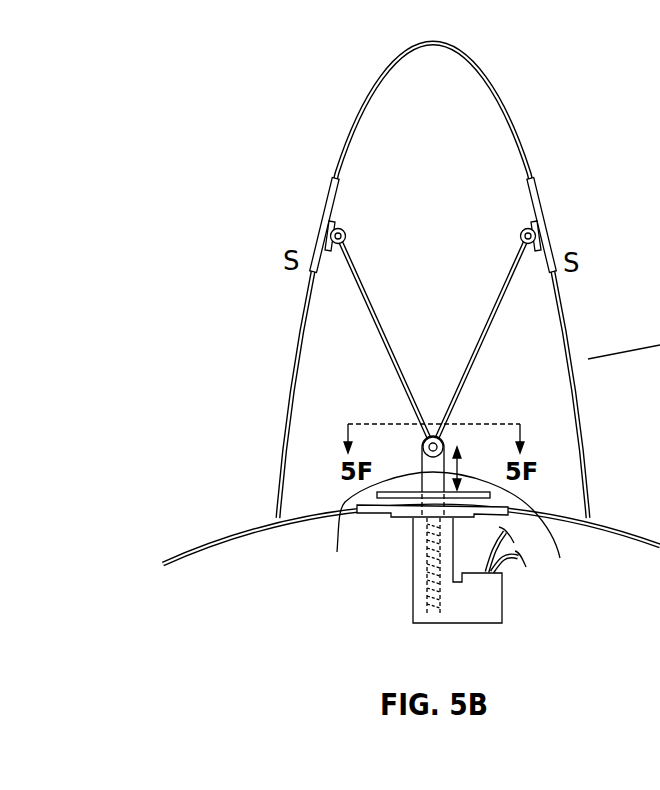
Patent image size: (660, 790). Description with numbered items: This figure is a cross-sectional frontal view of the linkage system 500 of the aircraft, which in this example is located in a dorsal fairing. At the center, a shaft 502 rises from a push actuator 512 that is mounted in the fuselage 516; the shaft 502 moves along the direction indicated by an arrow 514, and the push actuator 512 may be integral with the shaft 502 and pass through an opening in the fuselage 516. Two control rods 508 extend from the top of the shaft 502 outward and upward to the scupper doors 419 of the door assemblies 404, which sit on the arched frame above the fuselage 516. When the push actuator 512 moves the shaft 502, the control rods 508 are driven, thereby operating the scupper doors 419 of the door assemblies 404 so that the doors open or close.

The linkage system 500 is at (537, 97).
The door assemblies 404 is at (312, 207).
The scupper doors 419 is at (317, 250).
The control rods 508 is at (385, 327).
The shaft 502 is at (434, 510).
The linear actuator 512 is at (414, 540).
The arrow 514 is at (536, 558).
The fuselage 516 is at (237, 570).